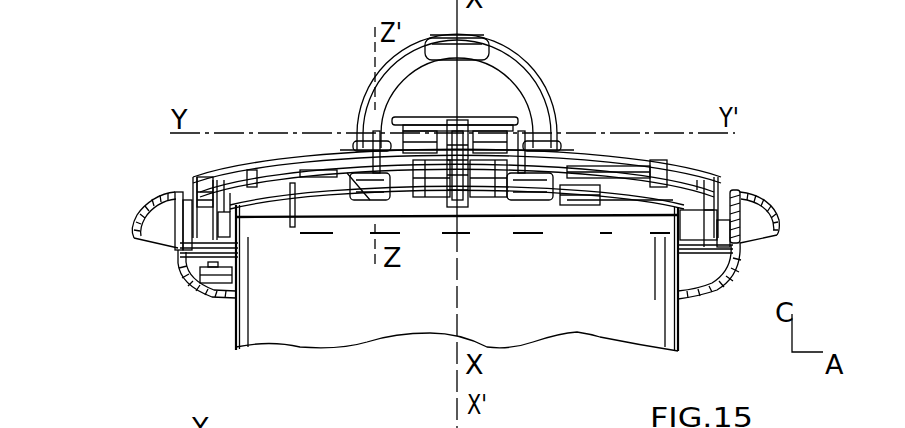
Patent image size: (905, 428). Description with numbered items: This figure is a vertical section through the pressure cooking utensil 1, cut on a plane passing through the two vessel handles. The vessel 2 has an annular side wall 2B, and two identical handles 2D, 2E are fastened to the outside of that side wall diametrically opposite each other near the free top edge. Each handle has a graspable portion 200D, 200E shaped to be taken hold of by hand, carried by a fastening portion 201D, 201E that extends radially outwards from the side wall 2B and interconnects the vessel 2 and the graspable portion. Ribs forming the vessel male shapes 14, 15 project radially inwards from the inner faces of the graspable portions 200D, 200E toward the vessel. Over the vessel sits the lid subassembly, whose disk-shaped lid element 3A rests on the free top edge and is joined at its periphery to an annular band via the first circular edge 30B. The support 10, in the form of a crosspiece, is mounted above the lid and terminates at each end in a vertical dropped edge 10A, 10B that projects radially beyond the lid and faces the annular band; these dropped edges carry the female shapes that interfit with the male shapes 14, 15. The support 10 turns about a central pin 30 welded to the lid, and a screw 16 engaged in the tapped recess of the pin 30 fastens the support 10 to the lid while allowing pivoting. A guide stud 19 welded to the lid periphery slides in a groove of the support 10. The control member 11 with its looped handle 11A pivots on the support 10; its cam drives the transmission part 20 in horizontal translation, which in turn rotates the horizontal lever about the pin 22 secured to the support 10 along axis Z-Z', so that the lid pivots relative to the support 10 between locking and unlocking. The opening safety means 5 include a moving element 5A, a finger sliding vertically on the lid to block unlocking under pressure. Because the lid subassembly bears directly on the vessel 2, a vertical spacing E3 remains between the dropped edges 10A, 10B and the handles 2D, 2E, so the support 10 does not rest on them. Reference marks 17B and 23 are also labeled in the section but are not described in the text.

The cooking utensil 1 is at (124, 119).
The vessel 2 is at (684, 329).
The annular side wall 2B is at (230, 327).
The handle 2D is at (137, 198).
The handle 2E is at (780, 197).
The disk-shaped lid element 3A is at (315, 201).
The opening safety means 5 is at (600, 205).
The moving element 5A is at (540, 188).
The support 10 is at (643, 160).
The vertical dropped edge 10A is at (207, 197).
The vertical dropped edge 10B is at (726, 197).
The control member 11 is at (558, 91).
The looped handle 11A is at (543, 77).
The vessel male shape 14 is at (735, 243).
The vessel male shape 15 is at (185, 200).
The screw 16 is at (488, 117).
The drive member 17B is at (480, 180).
The guide stud 19 is at (683, 163).
The transmission part 20 is at (420, 180).
The pin 22 is at (353, 143).
The pressure regulating valve 23 is at (509, 420).
The pin 30 is at (450, 180).
The first circular edge 30B is at (576, 420).
The graspable portion 200D is at (132, 240).
The graspable portion 200E is at (757, 215).
The fastening portion 201D is at (220, 297).
The fastening portion 201E is at (707, 297).
The vertical spacing E3 is at (182, 270).